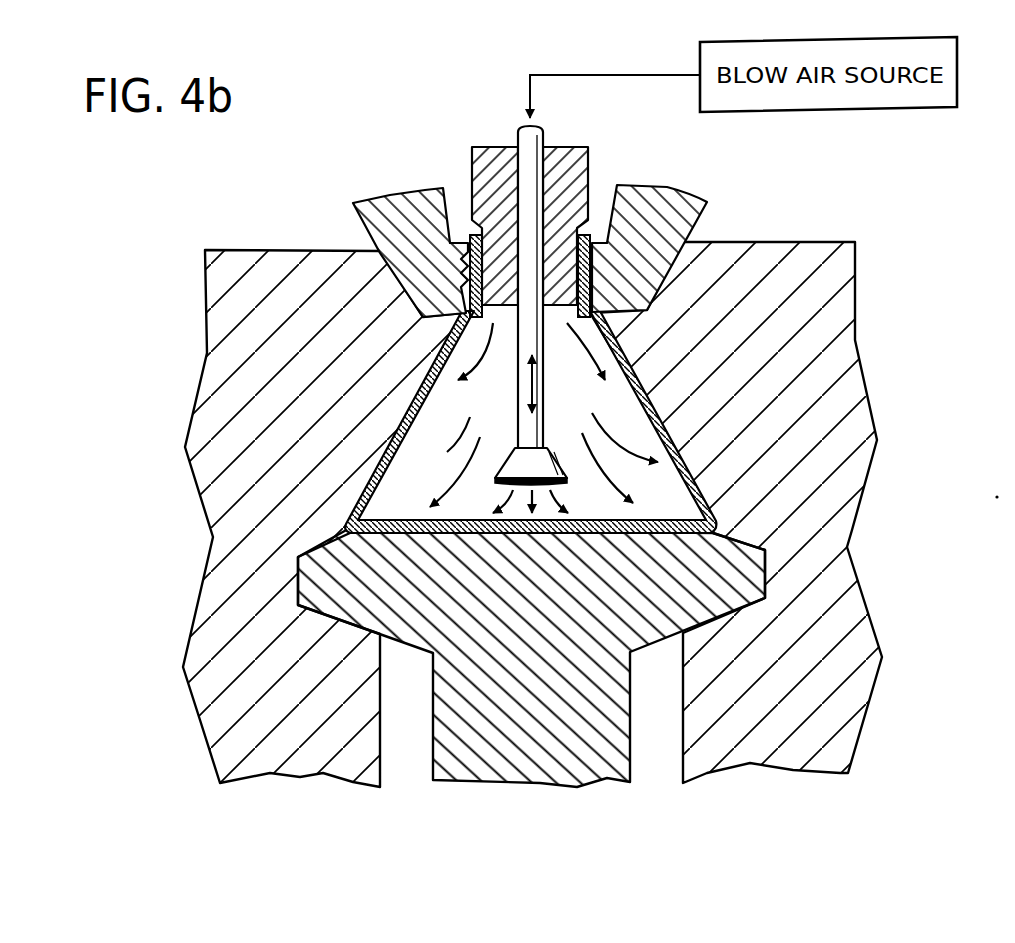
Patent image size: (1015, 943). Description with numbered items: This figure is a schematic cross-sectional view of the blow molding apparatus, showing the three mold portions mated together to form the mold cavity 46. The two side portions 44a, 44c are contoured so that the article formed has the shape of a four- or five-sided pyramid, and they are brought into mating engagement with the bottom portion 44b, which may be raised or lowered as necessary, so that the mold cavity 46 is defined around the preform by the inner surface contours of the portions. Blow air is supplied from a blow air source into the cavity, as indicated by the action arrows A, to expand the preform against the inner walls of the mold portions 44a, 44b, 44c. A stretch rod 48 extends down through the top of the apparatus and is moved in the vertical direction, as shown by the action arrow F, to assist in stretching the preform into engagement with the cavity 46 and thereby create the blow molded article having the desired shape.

The side mold portion 44a is at (250, 722).
The bottom mold portion 44b is at (557, 752).
The side mold portion 44c is at (812, 685).
The mold cavity 46 is at (498, 403).
The stretch rod 48 is at (543, 341).
The action arrows A is at (405, 463).
The action arrow F is at (543, 380).